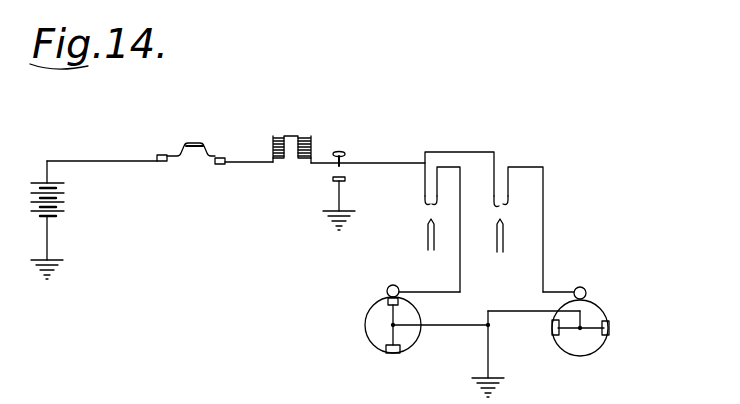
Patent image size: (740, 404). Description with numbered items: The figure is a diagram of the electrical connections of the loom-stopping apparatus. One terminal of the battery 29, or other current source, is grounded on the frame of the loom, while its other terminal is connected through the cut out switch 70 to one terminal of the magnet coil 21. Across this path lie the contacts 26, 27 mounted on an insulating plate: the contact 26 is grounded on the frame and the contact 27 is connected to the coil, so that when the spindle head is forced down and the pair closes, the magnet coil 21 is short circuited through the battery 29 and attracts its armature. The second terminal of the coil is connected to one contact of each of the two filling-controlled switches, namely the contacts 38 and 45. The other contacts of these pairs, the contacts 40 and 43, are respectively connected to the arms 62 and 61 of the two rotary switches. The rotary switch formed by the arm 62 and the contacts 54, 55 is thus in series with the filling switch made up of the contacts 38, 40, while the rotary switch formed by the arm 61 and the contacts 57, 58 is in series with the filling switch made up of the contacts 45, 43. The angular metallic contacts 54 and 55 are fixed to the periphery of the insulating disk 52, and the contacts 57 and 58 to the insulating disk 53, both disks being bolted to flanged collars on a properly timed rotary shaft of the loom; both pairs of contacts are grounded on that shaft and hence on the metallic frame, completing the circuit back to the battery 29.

The battery 29 is at (60, 220).
The cut out switch 70 is at (191, 145).
The magnet coil 21 is at (292, 140).
The contact 26 is at (342, 161).
The contact 27 is at (345, 181).
The contact of filling-controlled switch 38 is at (442, 190).
The contact of filling-controlled switch 45 is at (493, 192).
The contact of filling-controlled switch 40 is at (427, 237).
The contact of filling-controlled switch 43 is at (504, 237).
The arm of rotary switch 62 is at (434, 287).
The arm of rotary switch 61 is at (560, 292).
The insulating disk 52 is at (412, 342).
The metallic contact 54 is at (388, 301).
The metallic contact 55 is at (391, 353).
The insulating disk 53 is at (593, 347).
The angular contact 57 is at (556, 335).
The angular contact 58 is at (610, 328).